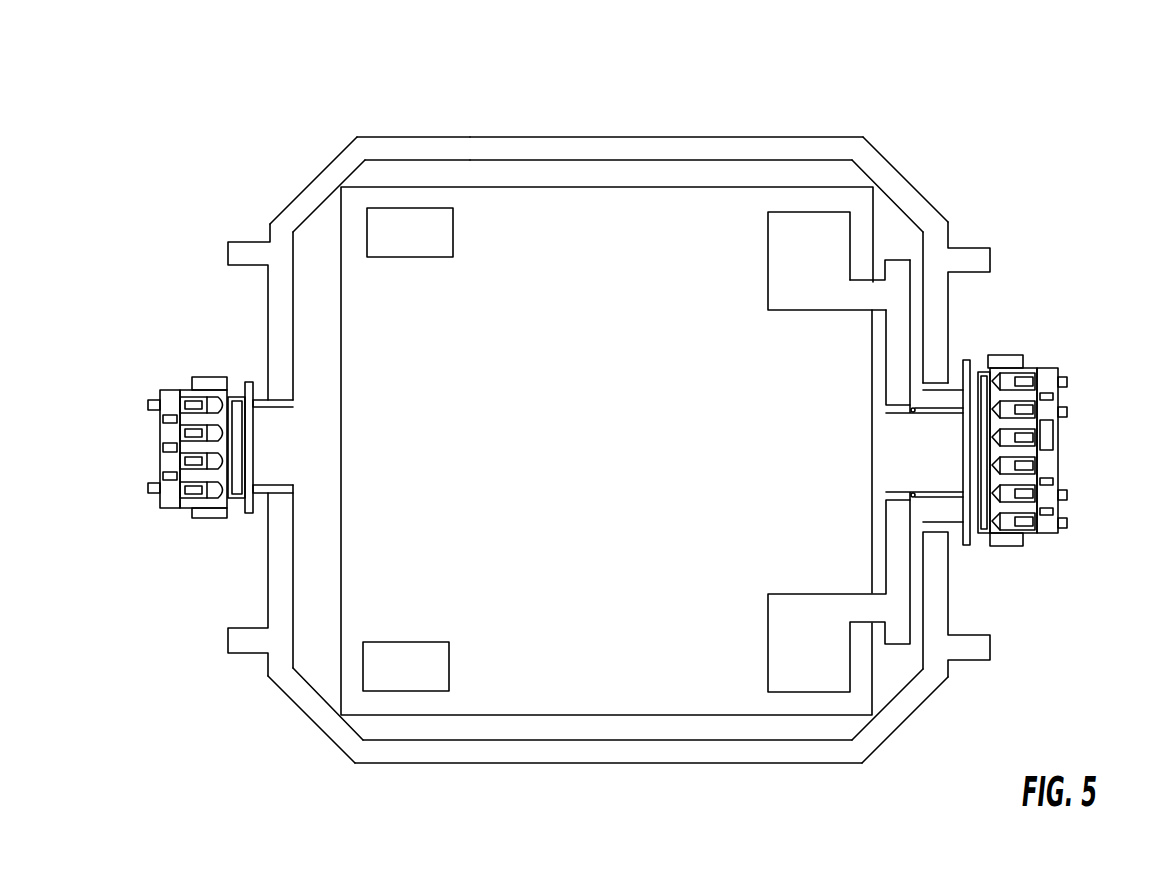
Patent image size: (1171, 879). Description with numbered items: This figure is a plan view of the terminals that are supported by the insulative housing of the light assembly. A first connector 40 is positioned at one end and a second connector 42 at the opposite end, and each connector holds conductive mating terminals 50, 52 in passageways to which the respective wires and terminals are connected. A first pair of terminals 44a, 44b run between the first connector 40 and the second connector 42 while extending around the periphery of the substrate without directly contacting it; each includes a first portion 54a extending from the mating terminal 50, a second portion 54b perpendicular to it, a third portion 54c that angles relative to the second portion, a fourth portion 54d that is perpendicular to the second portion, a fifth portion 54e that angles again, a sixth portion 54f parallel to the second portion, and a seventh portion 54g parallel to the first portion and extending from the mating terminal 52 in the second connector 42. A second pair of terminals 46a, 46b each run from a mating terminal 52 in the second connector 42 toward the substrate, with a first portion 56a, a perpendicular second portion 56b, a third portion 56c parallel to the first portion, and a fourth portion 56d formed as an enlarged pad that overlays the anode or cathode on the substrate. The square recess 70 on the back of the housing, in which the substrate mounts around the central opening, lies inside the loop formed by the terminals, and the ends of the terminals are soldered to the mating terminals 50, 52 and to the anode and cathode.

The first connector 40 is at (160, 432).
The second connector 42 is at (1058, 440).
The first terminal 44a is at (528, 142).
The first terminal 44b is at (545, 765).
The second terminal 46a is at (900, 337).
The second terminal 46b is at (892, 603).
The mating terminal 50 is at (152, 402).
The mating terminal 52 is at (1068, 383).
The first portion 54a is at (260, 400).
The second portion 54b is at (268, 315).
The third portion 54c is at (303, 185).
The fourth portion 54d is at (418, 142).
The fifth portion 54e is at (890, 184).
The sixth portion 54f is at (940, 293).
The seventh portion 54g is at (952, 383).
The first portion 56a is at (932, 415).
The second portion 56b is at (897, 362).
The third portion 56c is at (872, 295).
The fourth portion 56d is at (782, 265).
The recess 70 is at (728, 710).